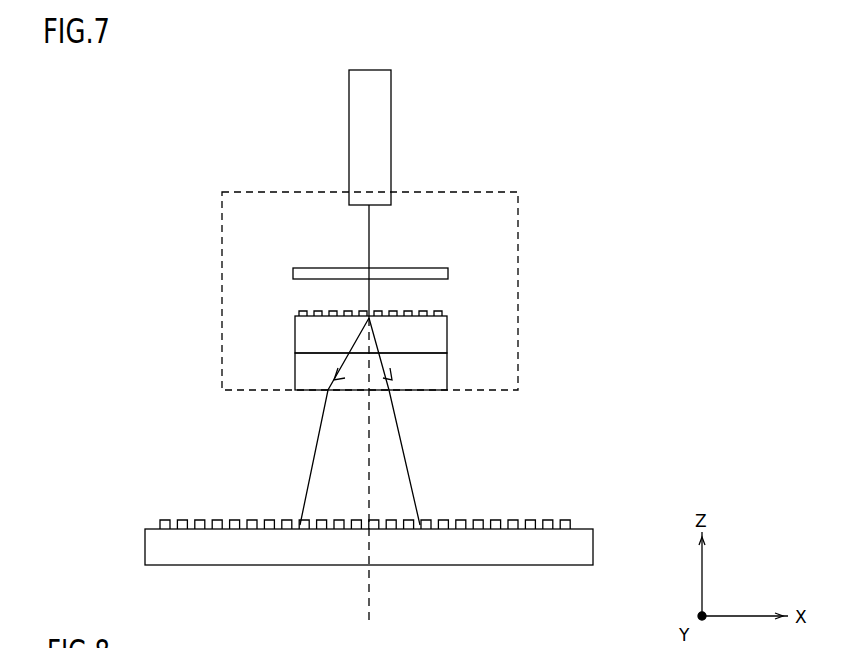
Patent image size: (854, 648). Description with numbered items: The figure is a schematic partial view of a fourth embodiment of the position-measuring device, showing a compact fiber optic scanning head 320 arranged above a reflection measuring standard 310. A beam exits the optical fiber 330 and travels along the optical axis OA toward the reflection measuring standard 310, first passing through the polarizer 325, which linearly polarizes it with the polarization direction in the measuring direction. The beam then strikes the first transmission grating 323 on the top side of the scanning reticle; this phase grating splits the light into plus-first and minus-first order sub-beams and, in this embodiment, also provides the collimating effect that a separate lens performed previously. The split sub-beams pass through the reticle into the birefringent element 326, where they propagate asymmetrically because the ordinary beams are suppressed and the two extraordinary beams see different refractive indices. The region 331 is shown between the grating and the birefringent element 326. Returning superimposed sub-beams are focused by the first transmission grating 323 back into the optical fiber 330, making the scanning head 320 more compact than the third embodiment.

The optical fiber 330 is at (380, 133).
The fiber optic scanning head 320 is at (508, 192).
The polarizer 325 is at (448, 272).
The first transmission grating 323 is at (441, 311).
The upper optical block 331 is at (430, 338).
The birefringent element 326 is at (423, 373).
The reflection measuring standard 310 is at (550, 518).
The optical axis OA is at (366, 600).